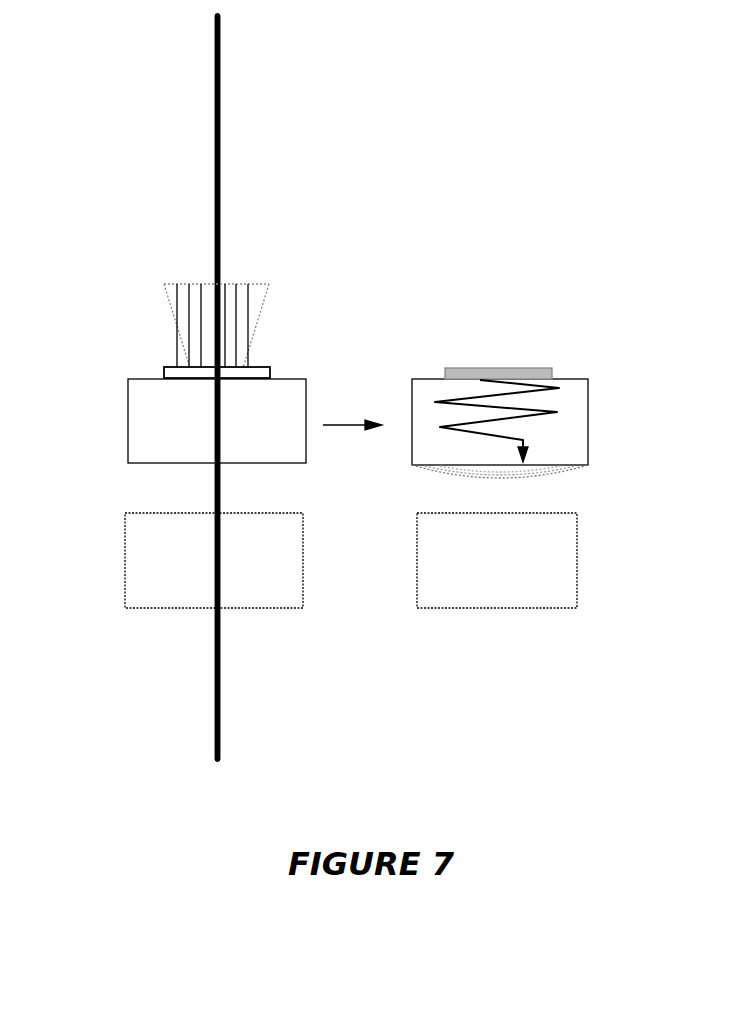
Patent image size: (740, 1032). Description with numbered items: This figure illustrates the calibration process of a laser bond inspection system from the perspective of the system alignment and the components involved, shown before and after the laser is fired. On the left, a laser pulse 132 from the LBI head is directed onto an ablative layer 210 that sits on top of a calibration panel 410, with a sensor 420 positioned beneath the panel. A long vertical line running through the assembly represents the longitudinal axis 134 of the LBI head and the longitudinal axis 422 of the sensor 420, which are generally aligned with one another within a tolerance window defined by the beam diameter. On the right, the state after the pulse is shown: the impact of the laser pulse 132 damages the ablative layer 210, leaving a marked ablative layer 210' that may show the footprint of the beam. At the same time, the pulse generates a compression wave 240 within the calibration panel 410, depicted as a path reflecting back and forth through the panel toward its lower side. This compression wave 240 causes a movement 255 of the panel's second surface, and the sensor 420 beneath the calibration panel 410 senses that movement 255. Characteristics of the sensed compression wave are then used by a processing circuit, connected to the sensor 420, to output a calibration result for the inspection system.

The longitudinal axis of the LBI head 134 is at (220, 140).
The longitudinal axis of the sensor 422 is at (220, 140).
The laser pulse 132 is at (198, 330).
The ablative layer 210 is at (312, 288).
The marked ablative layer 210' is at (521, 320).
The calibration panel 410 is at (306, 406).
The compression wave 240 is at (440, 427).
The movement of the second surface 255 is at (450, 468).
The sensor 420 is at (351, 560).